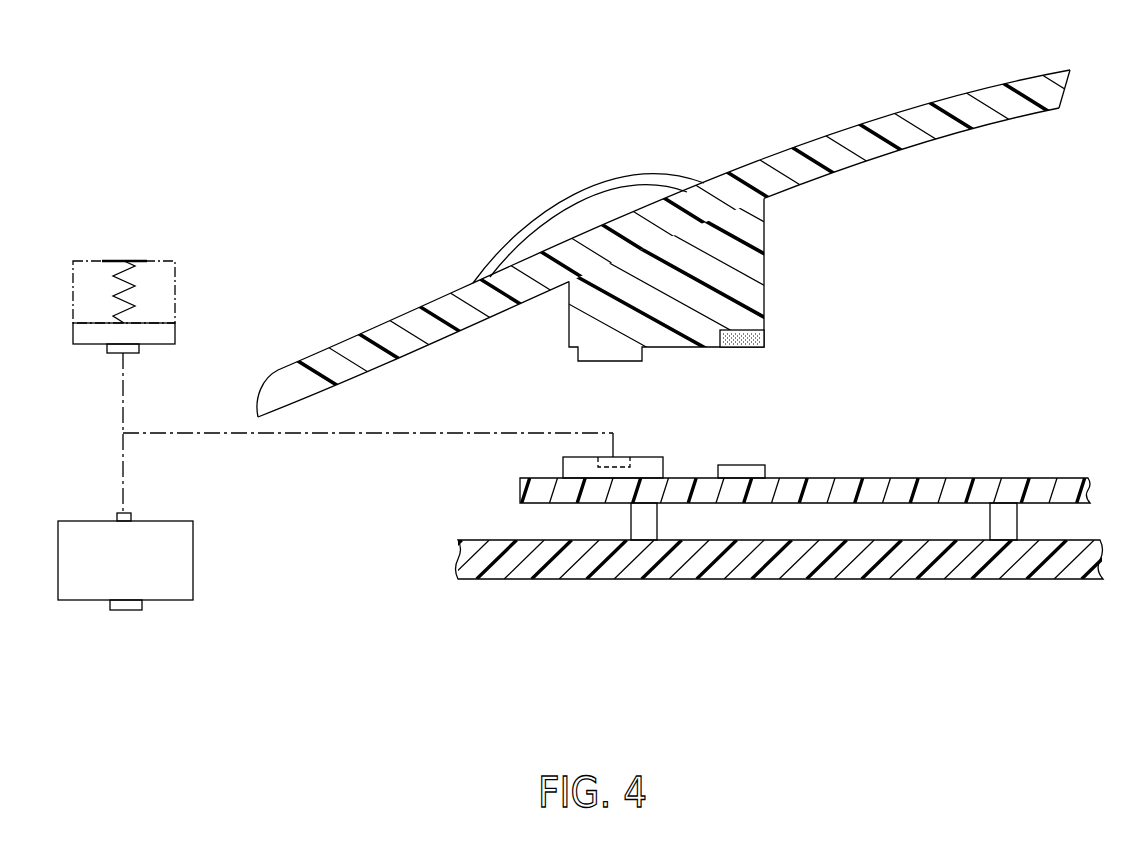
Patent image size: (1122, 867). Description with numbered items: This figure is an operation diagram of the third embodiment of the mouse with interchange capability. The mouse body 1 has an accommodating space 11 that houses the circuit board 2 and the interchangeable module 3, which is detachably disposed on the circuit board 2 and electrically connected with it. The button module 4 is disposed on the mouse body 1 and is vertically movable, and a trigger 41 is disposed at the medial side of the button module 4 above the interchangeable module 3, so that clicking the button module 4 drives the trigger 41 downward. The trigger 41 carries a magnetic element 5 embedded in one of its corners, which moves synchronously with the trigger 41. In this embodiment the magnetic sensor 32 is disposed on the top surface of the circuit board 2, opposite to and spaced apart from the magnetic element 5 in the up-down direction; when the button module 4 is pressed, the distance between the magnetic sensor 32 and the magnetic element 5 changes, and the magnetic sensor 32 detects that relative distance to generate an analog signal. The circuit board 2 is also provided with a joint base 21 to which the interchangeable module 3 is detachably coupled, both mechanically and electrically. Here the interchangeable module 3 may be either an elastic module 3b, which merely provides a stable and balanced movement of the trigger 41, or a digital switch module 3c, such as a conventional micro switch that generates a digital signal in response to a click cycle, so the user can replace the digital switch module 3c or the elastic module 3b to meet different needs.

The mouse body 1 is at (583, 590).
The circuit board 2 is at (905, 470).
The interchangeable module 3 is at (290, 263).
The elastic module 3b is at (196, 293).
The digital switch module 3c is at (218, 557).
The button module 4 is at (768, 151).
The magnetic element 5 is at (764, 338).
The accommodating space 11 is at (958, 193).
The joint base 21 is at (647, 457).
The magnetic sensor 32 is at (741, 465).
The trigger 41 is at (764, 281).